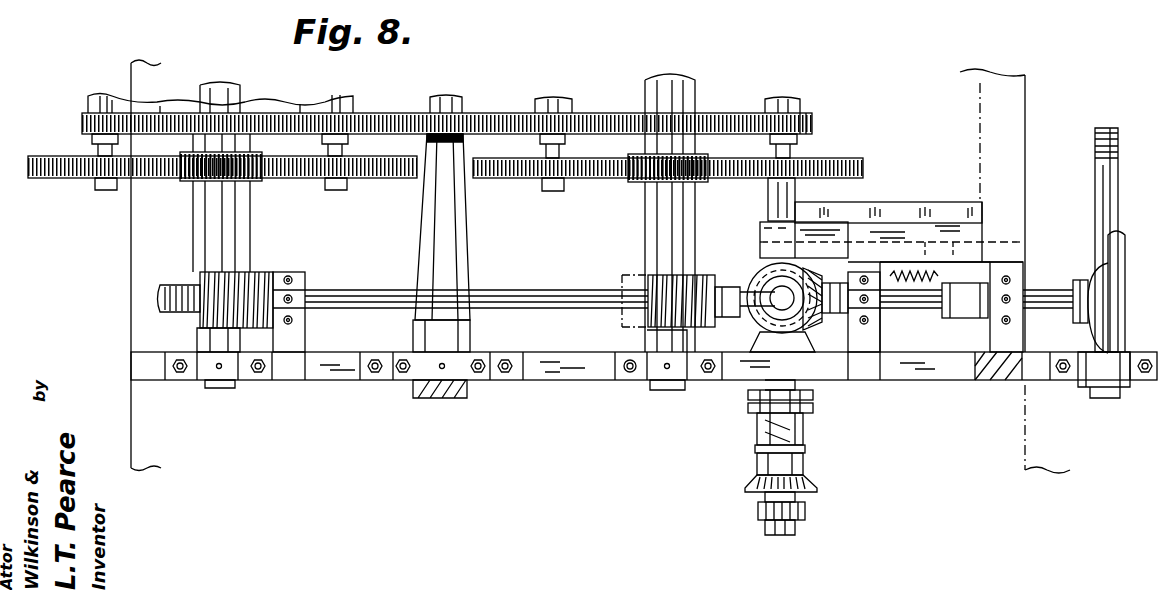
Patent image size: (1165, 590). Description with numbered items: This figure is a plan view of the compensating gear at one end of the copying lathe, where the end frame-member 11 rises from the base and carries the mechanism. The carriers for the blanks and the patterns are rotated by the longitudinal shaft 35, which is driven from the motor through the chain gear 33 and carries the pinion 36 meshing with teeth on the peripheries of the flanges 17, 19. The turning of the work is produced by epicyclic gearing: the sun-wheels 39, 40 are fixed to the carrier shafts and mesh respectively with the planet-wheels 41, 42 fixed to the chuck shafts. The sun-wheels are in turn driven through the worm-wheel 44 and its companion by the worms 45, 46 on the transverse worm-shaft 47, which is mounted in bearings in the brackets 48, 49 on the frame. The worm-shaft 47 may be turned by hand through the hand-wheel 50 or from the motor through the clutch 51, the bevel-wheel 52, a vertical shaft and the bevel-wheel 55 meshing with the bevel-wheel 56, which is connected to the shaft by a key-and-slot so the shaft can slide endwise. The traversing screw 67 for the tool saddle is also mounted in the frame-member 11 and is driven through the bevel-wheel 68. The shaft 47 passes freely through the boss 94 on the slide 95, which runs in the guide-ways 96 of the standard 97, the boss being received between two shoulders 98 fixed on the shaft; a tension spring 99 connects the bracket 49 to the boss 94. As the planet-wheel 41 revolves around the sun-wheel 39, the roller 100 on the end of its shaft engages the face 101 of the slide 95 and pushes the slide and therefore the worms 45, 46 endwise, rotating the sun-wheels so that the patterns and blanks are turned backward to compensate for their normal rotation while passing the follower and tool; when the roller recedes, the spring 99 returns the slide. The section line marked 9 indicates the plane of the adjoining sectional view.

The section line 9- 9 is at (1005, 437).
The end frame-member 11 is at (350, 372).
The flange 17 is at (812, 126).
The flange 19 is at (260, 112).
The chain gear 33 is at (806, 507).
The shaft 35 is at (432, 104).
The pinion 36 is at (458, 108).
The sun-wheel 39 is at (628, 178).
The sun-wheel 40 is at (262, 180).
The planet-wheel 41 is at (845, 165).
The planet-wheel 42 is at (362, 180).
The worm-wheel 44 is at (172, 312).
The worm 45 is at (715, 338).
The worm 46 is at (262, 275).
The worm-shaft 47 is at (575, 298).
The bracket 48 is at (612, 305).
The bracket 49 is at (867, 310).
The hand-wheel 50 is at (1108, 262).
The clutch 51 is at (790, 432).
The bevel-wheel 52 is at (802, 350).
The bevel-wheel 55 is at (762, 275).
The bevel-wheel 56 is at (806, 324).
The screw 67 is at (1096, 140).
The bevel-wheel 68 is at (757, 477).
The boss 94 is at (965, 302).
The slide 95 is at (957, 212).
The guide-ways 96 is at (911, 240).
The standard 97 is at (965, 236).
The shoulder 98 is at (953, 302).
The tension spring 99 is at (907, 288).
The roller 100 is at (768, 200).
The face 101 is at (760, 240).